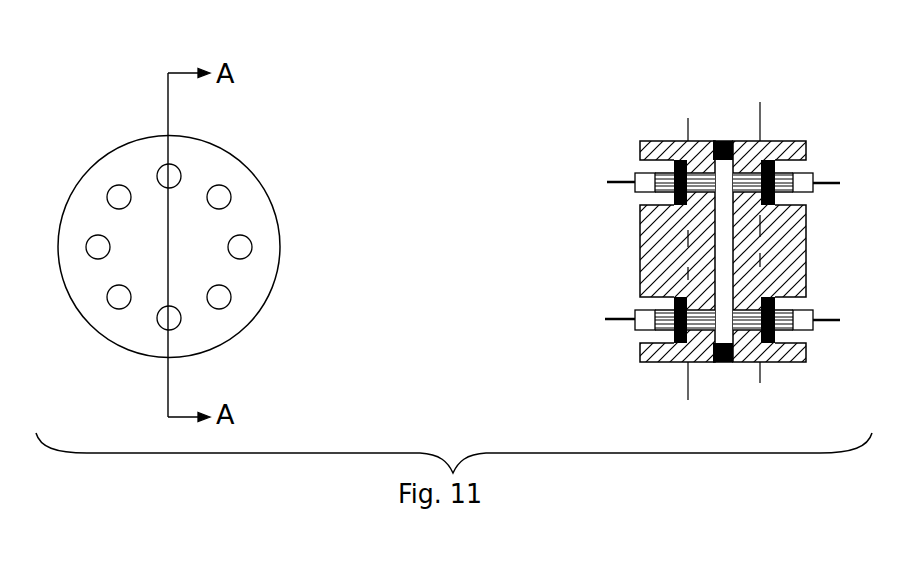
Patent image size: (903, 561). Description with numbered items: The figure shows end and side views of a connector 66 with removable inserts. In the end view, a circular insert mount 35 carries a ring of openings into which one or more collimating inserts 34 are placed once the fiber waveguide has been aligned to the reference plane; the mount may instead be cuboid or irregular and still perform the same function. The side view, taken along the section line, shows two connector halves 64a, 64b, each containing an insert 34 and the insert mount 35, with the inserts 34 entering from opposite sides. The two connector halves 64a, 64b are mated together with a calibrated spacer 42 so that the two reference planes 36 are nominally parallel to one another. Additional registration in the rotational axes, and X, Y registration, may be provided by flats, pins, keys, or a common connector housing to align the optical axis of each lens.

The collimating insert 34 is at (633, 190).
The insert mount 35 is at (638, 252).
The reference plane 36 is at (758, 123).
The calibrated spacer 42 is at (722, 141).
The connector half 64a is at (666, 141).
The connector half 64b is at (800, 141).
The connector 66 is at (695, 208).